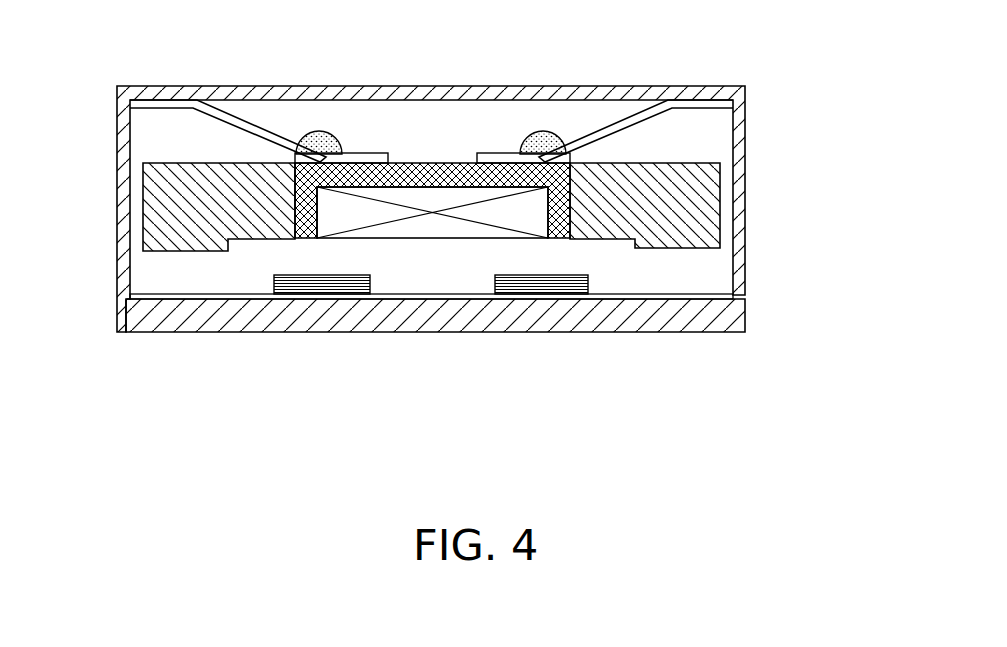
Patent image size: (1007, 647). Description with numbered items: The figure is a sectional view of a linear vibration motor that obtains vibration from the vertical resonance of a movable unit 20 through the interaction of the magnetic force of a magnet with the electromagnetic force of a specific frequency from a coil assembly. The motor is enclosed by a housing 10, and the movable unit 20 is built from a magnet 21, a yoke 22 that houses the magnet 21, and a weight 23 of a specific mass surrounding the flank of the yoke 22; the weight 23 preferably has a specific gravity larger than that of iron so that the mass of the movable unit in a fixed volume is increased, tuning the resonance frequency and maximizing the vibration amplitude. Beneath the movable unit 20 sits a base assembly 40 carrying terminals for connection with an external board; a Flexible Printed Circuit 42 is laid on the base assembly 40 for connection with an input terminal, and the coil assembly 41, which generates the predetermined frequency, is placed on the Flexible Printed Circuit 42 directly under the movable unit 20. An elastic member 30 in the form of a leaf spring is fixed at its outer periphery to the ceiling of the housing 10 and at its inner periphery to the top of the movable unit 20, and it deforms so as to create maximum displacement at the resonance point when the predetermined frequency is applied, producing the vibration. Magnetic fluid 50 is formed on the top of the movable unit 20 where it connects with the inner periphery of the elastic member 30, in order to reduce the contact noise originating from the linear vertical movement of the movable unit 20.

The housing 10 is at (746, 100).
The movable unit 20 is at (431, 313).
The magnet 21 is at (432, 300).
The yoke 22 is at (562, 238).
The weight 23 is at (677, 240).
The elastic member 30 is at (609, 134).
The base assembly 40 is at (405, 325).
The coil assembly 41 is at (327, 288).
The Flexible Printed Circuit 42 is at (205, 295).
The magnetic fluid 50 is at (312, 138).